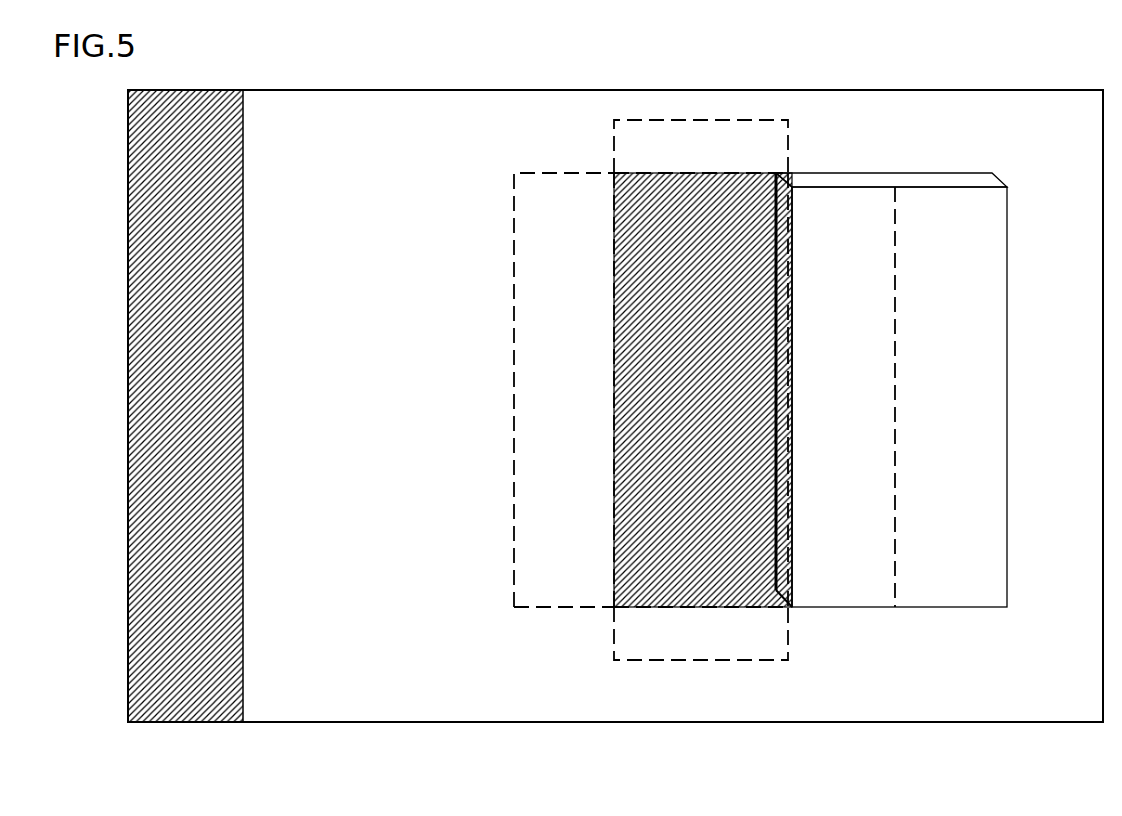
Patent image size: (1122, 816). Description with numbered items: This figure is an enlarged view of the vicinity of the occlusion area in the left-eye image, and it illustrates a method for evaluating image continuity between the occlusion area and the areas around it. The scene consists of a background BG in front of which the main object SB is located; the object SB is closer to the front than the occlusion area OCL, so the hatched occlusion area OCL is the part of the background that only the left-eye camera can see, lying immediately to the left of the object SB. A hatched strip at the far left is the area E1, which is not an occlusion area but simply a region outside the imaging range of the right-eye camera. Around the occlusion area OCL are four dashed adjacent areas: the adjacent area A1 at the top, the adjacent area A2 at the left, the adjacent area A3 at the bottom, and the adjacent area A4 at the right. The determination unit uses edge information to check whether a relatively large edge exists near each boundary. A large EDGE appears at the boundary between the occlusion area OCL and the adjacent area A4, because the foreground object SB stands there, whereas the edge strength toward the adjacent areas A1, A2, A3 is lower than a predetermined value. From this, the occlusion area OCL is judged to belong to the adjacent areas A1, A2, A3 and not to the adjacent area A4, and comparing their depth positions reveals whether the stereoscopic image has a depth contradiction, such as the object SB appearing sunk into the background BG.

The background BG is at (615, 406).
The area E1 is at (186, 702).
The occlusion area OCL is at (636, 530).
The adjacent area A1 is at (635, 143).
The adjacent area A2 is at (530, 306).
The adjacent area A3 is at (697, 640).
The adjacent area A4 is at (843, 588).
The object SB is at (978, 242).
The edge EDGE is at (787, 173).